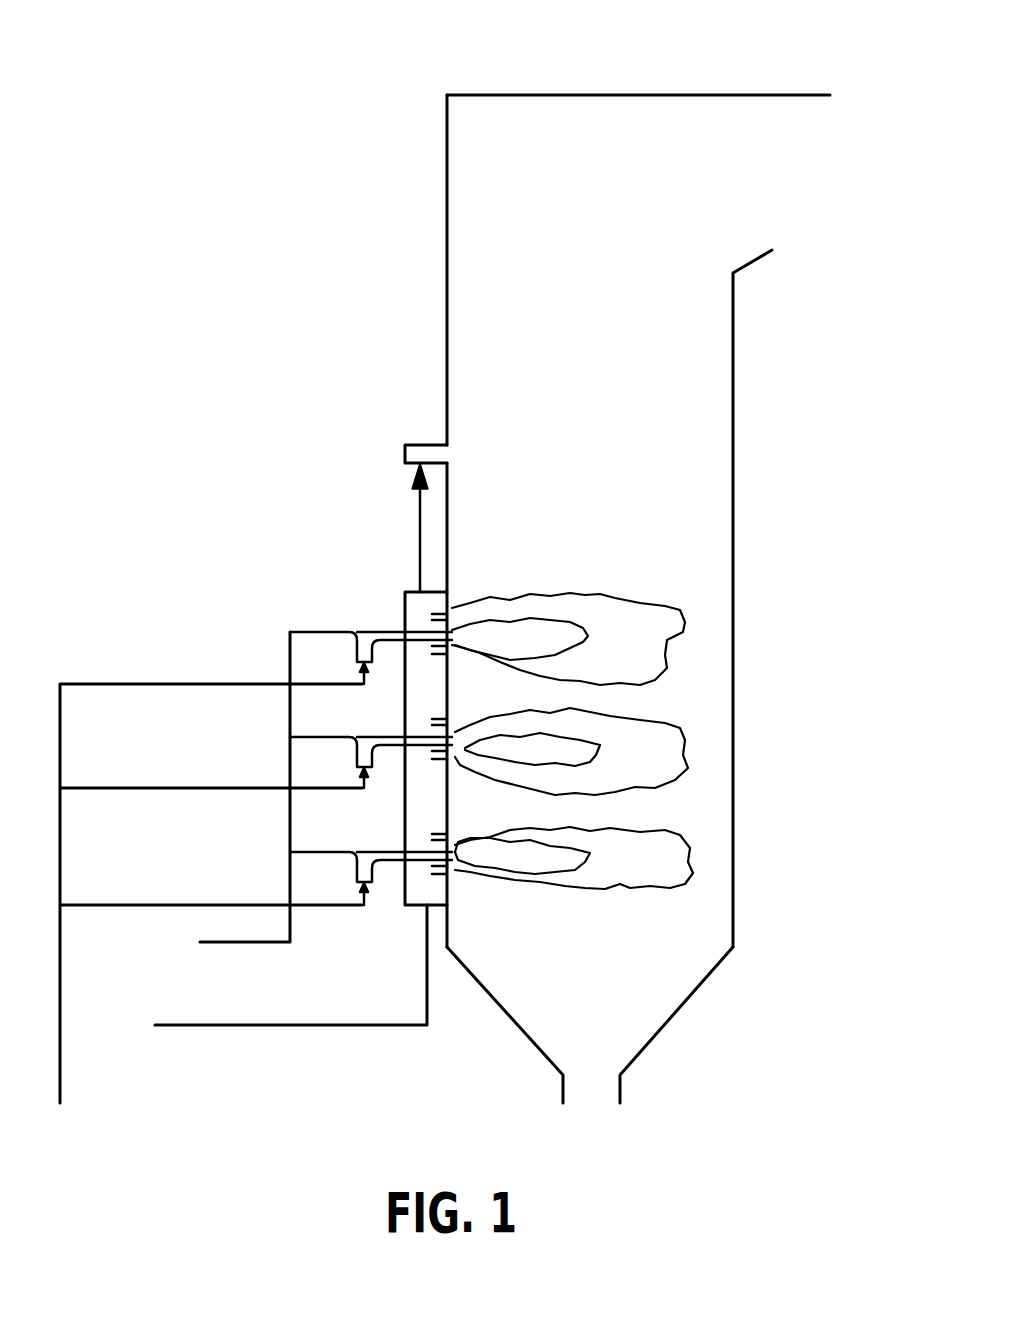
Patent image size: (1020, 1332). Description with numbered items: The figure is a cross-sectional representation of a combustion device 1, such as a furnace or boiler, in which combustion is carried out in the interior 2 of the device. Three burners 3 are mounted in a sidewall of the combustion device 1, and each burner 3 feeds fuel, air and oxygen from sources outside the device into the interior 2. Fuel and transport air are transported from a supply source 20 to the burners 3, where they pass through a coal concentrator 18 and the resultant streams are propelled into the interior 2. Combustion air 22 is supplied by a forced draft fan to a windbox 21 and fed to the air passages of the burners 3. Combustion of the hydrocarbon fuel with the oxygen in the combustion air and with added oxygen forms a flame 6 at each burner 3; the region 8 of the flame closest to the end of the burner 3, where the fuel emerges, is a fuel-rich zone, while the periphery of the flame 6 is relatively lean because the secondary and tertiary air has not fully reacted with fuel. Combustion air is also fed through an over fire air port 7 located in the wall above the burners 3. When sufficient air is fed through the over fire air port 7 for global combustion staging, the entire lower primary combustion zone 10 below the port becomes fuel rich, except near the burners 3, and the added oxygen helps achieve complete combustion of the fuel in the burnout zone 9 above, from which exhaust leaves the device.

The combustion device 1 is at (595, 91).
The interior 2 is at (481, 538).
The burner 3 is at (393, 633).
The flame 6 is at (653, 658).
The over fire air port 7 is at (428, 444).
The region of the flame 8 is at (683, 625).
The burnout zone 9 is at (581, 413).
The primary combustion zone 10 is at (670, 538).
The coal concentrator 18 is at (452, 606).
The supply source 20 is at (202, 916).
The windbox 21 is at (405, 797).
The combustion air 22 is at (291, 986).